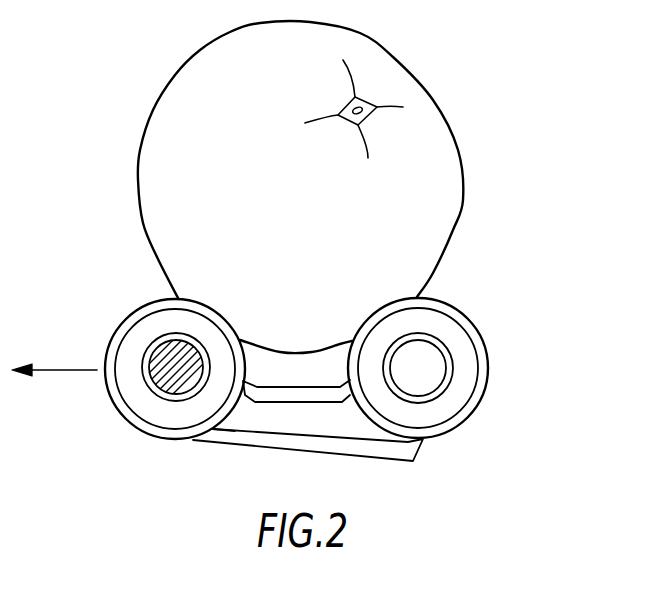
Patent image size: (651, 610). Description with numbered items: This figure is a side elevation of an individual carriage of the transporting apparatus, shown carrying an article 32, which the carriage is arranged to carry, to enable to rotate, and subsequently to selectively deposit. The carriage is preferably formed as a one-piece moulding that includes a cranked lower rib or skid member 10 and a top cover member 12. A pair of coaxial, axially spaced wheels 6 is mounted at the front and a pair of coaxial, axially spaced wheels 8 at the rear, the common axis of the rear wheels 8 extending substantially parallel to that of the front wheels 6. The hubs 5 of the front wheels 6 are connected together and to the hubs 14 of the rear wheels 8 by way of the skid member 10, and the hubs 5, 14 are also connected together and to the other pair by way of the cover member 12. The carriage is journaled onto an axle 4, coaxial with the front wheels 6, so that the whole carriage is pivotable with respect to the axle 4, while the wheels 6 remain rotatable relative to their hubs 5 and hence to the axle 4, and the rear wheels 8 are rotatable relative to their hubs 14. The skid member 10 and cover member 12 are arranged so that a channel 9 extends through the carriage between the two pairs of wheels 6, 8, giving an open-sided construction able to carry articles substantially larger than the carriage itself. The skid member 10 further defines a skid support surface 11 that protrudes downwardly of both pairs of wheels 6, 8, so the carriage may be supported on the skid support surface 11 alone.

The article 32 is at (258, 149).
The axle 4 is at (170, 352).
The hubs 5 is at (143, 358).
The wheels 6 is at (130, 403).
The wheels 8 is at (458, 337).
The hubs 14 is at (447, 387).
The channel 9 is at (345, 357).
The skid member 10 is at (380, 457).
The skid support surface 11 is at (213, 440).
The cover member 12 is at (297, 395).